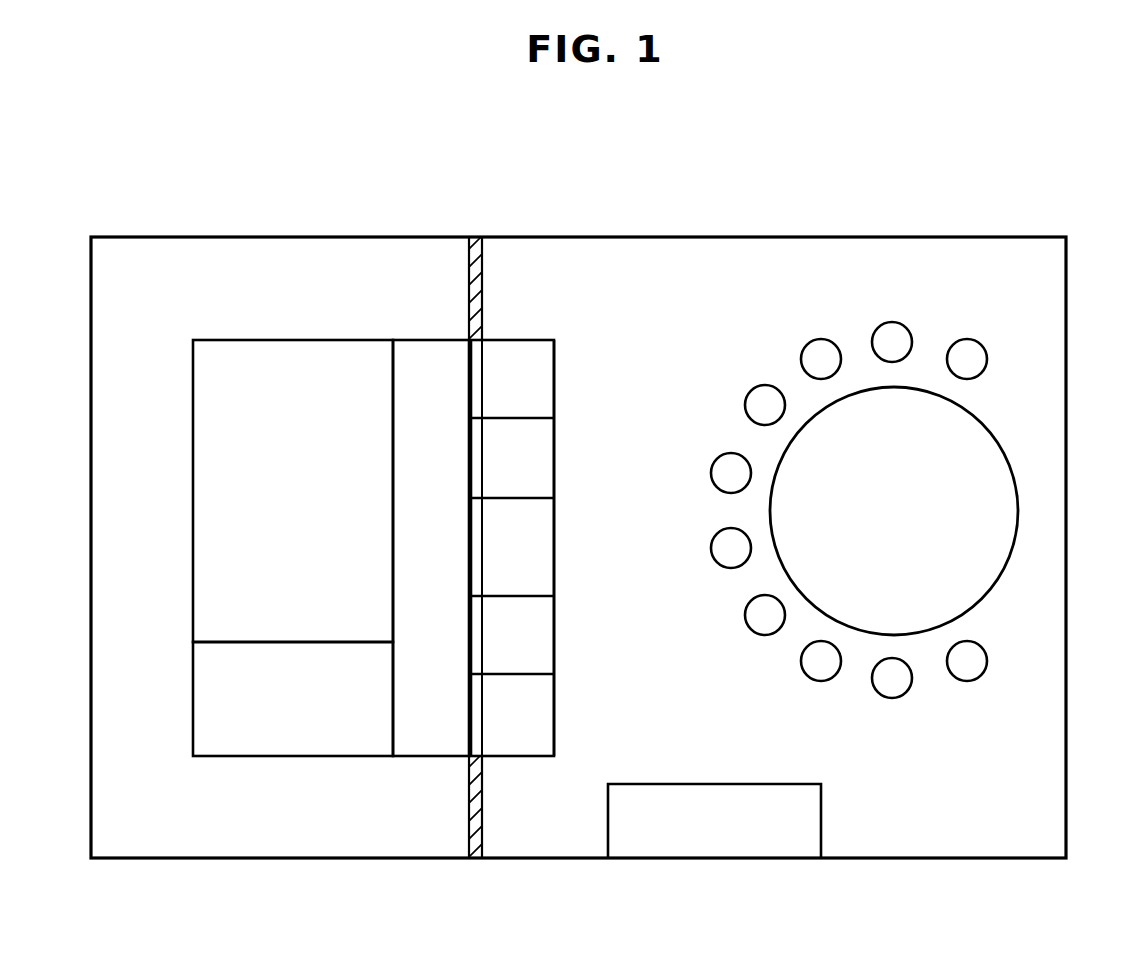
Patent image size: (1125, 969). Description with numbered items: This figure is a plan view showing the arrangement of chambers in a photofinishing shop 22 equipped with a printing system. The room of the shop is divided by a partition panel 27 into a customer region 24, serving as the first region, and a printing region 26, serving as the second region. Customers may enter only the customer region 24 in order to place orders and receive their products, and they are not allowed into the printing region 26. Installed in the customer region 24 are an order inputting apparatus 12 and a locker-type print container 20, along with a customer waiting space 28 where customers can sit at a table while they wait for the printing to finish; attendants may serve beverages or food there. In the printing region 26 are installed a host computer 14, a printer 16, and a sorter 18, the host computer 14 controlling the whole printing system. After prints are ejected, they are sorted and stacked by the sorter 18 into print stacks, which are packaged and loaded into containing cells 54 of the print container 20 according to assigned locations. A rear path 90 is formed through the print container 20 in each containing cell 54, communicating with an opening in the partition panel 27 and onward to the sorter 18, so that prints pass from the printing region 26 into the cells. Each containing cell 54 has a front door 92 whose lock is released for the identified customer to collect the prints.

The order inputting apparatus 12 is at (723, 845).
The host computer 14 is at (285, 748).
The printer 16 is at (290, 352).
The sorter 18 is at (407, 350).
The print container 20 is at (522, 360).
The photofinishing shop 22 is at (990, 210).
The customer region 24 is at (741, 234).
The printing region 26 is at (198, 234).
The partition panel 27 is at (470, 274).
The customer waiting space 28 is at (995, 513).
The containing cells 54 is at (543, 392).
The rear path 90 is at (470, 346).
The front door 92 is at (554, 349).